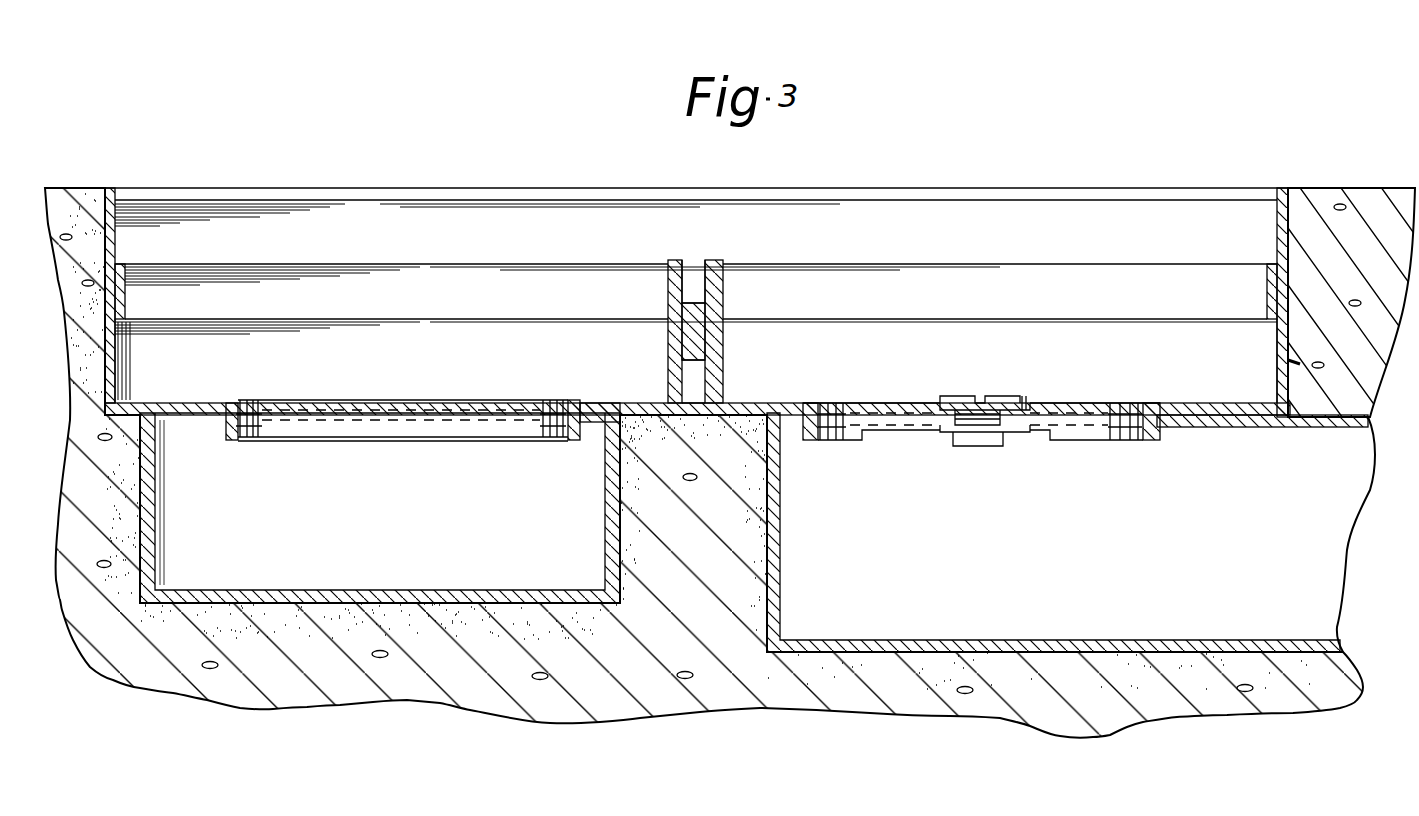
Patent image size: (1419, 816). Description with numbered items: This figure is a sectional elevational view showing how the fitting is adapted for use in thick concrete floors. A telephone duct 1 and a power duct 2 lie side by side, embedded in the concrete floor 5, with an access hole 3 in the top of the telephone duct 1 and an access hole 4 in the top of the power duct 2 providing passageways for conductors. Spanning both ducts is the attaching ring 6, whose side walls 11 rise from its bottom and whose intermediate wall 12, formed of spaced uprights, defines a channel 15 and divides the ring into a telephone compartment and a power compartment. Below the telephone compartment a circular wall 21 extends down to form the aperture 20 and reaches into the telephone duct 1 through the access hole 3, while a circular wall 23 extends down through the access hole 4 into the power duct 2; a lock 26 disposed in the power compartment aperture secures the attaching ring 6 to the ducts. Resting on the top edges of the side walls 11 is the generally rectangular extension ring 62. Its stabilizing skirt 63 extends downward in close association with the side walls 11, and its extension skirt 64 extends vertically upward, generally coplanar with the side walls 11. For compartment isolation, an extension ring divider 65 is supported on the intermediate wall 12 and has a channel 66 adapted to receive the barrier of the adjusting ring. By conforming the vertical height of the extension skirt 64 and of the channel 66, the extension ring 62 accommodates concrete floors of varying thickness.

The telephone duct 1 is at (777, 583).
The power duct 2 is at (148, 580).
The access hole 3 is at (823, 432).
The access hole 4 is at (245, 437).
The concrete floor 5 is at (757, 683).
The attaching ring 6 is at (1302, 362).
The side walls 11 is at (115, 385).
The intermediate wall 12 is at (664, 357).
The channel 15 is at (697, 380).
The aperture 20 is at (775, 412).
The circular wall 21 is at (1133, 428).
The circular wall 23 is at (548, 428).
The lock 26 is at (968, 455).
The extension ring 62 is at (348, 240).
The stabilizing skirt 63 is at (118, 308).
The extension skirt 64 is at (116, 254).
The extension ring divider 65 is at (718, 305).
The channel 66 is at (700, 263).